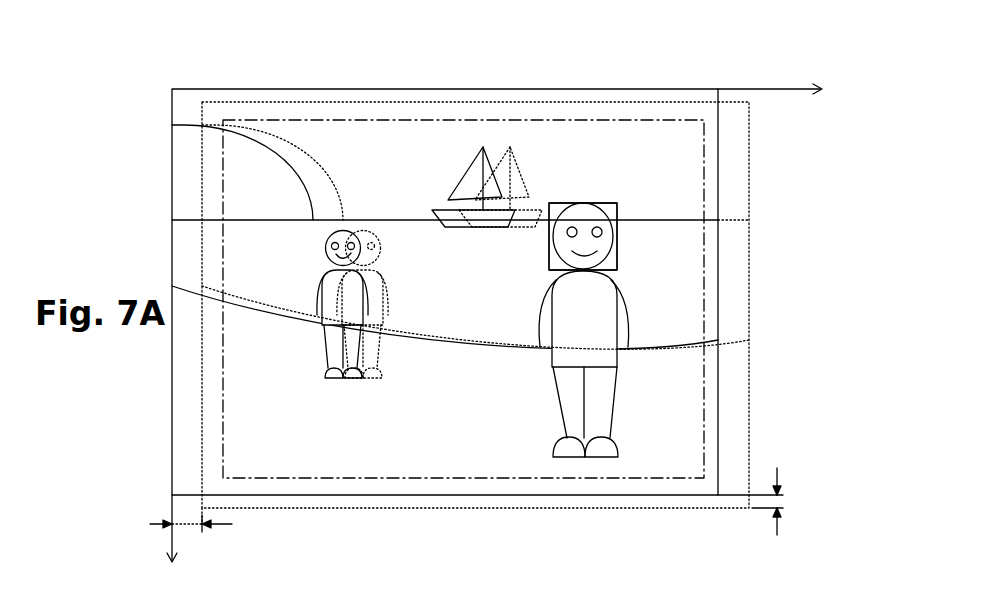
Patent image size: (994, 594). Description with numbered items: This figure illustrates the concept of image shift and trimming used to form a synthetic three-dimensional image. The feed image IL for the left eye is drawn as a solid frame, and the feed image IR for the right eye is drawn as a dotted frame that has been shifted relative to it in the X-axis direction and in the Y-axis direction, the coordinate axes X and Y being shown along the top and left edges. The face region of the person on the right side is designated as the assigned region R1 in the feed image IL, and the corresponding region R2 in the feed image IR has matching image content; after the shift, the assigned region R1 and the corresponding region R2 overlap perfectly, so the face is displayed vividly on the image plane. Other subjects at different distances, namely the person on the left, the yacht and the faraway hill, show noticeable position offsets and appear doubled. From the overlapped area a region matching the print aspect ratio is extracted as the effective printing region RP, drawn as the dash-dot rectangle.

The feed image for the left eye IL is at (718, 190).
The feed image for the right eye IR is at (750, 422).
The effective printing region RP is at (532, 118).
The assigned region R1 is at (617, 257).
The corresponding region R2 is at (617, 257).
The X-axis direction X is at (770, 76).
The Y-axis direction Y is at (159, 533).